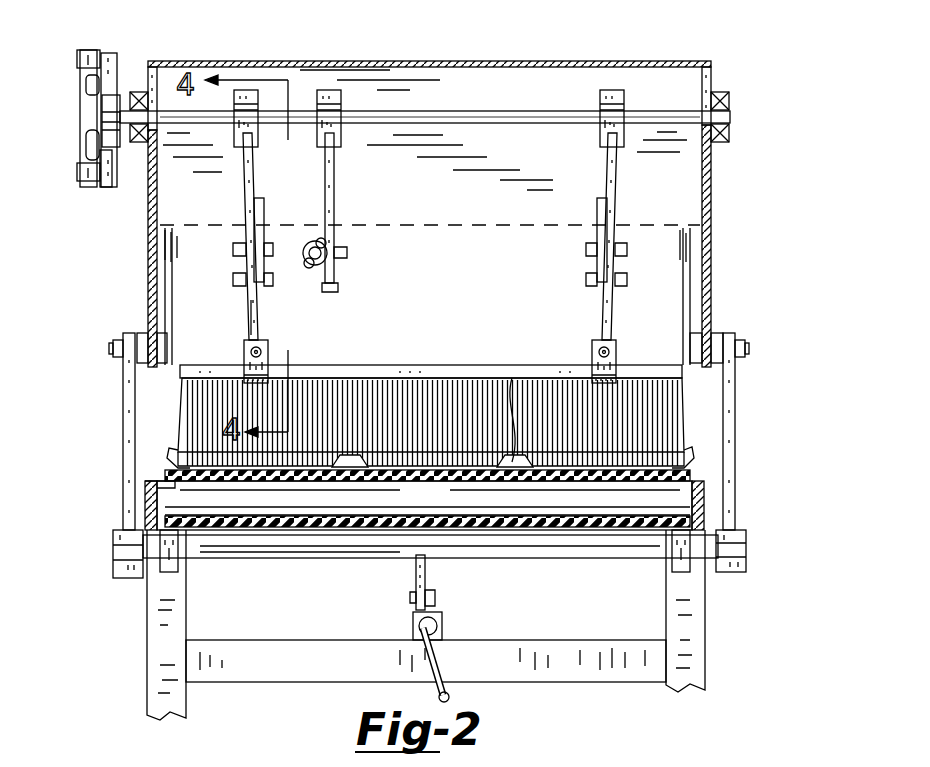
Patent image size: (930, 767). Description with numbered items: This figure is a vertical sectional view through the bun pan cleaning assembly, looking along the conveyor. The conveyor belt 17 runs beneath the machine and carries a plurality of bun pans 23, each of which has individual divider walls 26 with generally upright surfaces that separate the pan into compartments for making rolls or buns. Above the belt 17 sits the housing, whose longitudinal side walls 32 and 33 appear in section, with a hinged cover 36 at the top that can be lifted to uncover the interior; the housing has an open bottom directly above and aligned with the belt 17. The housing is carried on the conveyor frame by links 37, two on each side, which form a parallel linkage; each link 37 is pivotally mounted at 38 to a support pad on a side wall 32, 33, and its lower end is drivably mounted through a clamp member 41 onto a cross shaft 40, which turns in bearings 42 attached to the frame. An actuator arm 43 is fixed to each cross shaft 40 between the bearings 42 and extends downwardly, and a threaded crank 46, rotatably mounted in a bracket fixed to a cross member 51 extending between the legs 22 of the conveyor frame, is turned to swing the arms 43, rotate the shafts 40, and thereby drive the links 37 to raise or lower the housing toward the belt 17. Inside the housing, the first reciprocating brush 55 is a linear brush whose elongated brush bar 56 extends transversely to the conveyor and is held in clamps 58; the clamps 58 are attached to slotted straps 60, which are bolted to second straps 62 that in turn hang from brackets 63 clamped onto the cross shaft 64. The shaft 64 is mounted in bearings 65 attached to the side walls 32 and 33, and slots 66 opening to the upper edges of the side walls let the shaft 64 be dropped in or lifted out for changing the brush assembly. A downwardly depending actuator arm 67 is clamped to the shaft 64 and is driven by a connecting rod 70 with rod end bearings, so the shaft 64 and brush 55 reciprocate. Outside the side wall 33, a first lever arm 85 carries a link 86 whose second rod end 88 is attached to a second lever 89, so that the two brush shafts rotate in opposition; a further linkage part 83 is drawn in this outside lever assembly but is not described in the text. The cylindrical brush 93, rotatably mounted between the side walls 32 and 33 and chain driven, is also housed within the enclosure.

The belt 17 is at (622, 540).
The legs 22 is at (183, 700).
The bun pans 23 is at (685, 448).
The divider walls 26 is at (512, 380).
The longitudinal side wall 32 is at (712, 205).
The longitudinal side wall 33 is at (160, 312).
The cover 36 is at (688, 62).
The links 37 is at (125, 428).
The pivot 38 is at (112, 350).
The cross shafts 40 is at (548, 540).
The clamp members 41 is at (125, 575).
The bearings 42 is at (168, 572).
The actuator arm 43 is at (423, 583).
The crank 46 is at (440, 665).
The cross member 51 is at (552, 675).
The first reciprocating brush 55 is at (630, 393).
The brush bar 56 is at (430, 367).
The clamps 58 is at (248, 355).
The straps 60 is at (262, 328).
The second straps 62 is at (252, 190).
The brackets 63 is at (258, 95).
The cross shaft 64 is at (508, 115).
The bearings 65 is at (140, 145).
The slots 66 is at (158, 75).
The actuator arm 67 is at (334, 218).
The connecting rod 70 is at (305, 252).
The link 83 is at (95, 190).
The first lever arm 85 is at (110, 188).
The link 86 is at (92, 118).
The second rod end 88 is at (90, 55).
The second lever 89 is at (117, 72).
The cylindrical brush 93 is at (695, 262).